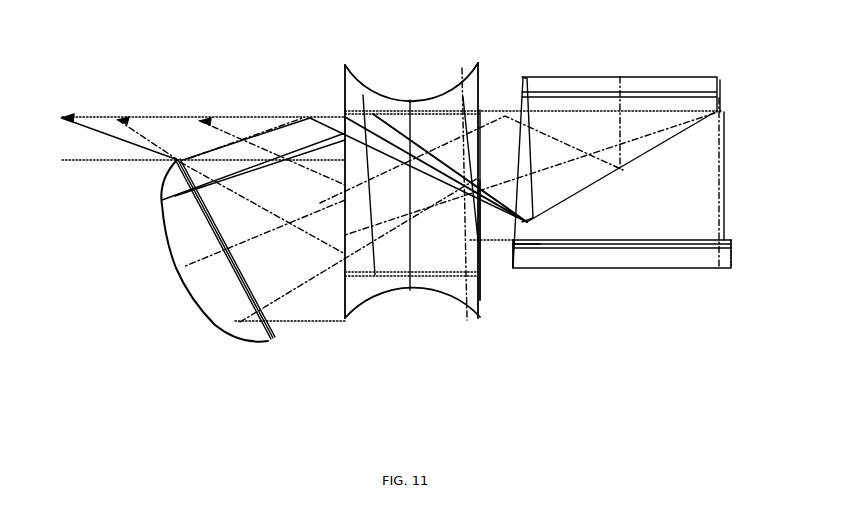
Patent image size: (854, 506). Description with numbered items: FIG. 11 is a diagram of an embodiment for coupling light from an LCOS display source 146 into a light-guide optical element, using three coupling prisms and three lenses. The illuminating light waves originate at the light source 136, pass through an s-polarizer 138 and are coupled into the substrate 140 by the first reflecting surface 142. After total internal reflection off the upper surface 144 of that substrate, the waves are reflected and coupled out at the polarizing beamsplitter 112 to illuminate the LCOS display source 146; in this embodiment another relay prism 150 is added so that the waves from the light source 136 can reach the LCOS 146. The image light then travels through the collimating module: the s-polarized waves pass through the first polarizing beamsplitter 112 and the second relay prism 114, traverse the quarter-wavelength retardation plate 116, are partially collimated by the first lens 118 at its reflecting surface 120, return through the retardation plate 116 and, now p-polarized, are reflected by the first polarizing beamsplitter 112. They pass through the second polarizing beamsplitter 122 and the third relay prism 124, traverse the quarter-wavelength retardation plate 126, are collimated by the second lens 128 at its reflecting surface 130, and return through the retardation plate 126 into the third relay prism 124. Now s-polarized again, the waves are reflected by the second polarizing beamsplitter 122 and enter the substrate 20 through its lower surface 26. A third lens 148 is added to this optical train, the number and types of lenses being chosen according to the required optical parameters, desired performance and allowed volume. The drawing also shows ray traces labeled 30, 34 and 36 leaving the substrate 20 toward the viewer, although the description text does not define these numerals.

The substrate 20 is at (90, 150).
The lower surface 26 is at (64, 160).
The light ray 30 is at (224, 133).
The light ray 34 is at (66, 116).
The light ray 36 is at (117, 118).
The first polarizing beamsplitter 112 is at (492, 207).
The second relay prism 114 is at (512, 245).
The quarter-wavelength retardation plate 116 is at (487, 260).
The first lens 118 is at (382, 283).
The reflecting surface 120 is at (438, 293).
The second polarizing beamsplitter 122 is at (318, 242).
The third relay prism 124 is at (345, 319).
The quarter-wavelength retardation plate 126 is at (268, 330).
The second lens 128 is at (233, 308).
The reflecting surface 130 is at (190, 296).
The light source 136 is at (646, 258).
The s-polarizer 138 is at (732, 242).
The substrate 140 is at (576, 112).
The first reflecting surface 142 is at (668, 146).
The upper surface 144 is at (537, 110).
The LCOS display source 146 is at (658, 80).
The third lens 148 is at (400, 100).
The relay prism 150 is at (711, 213).